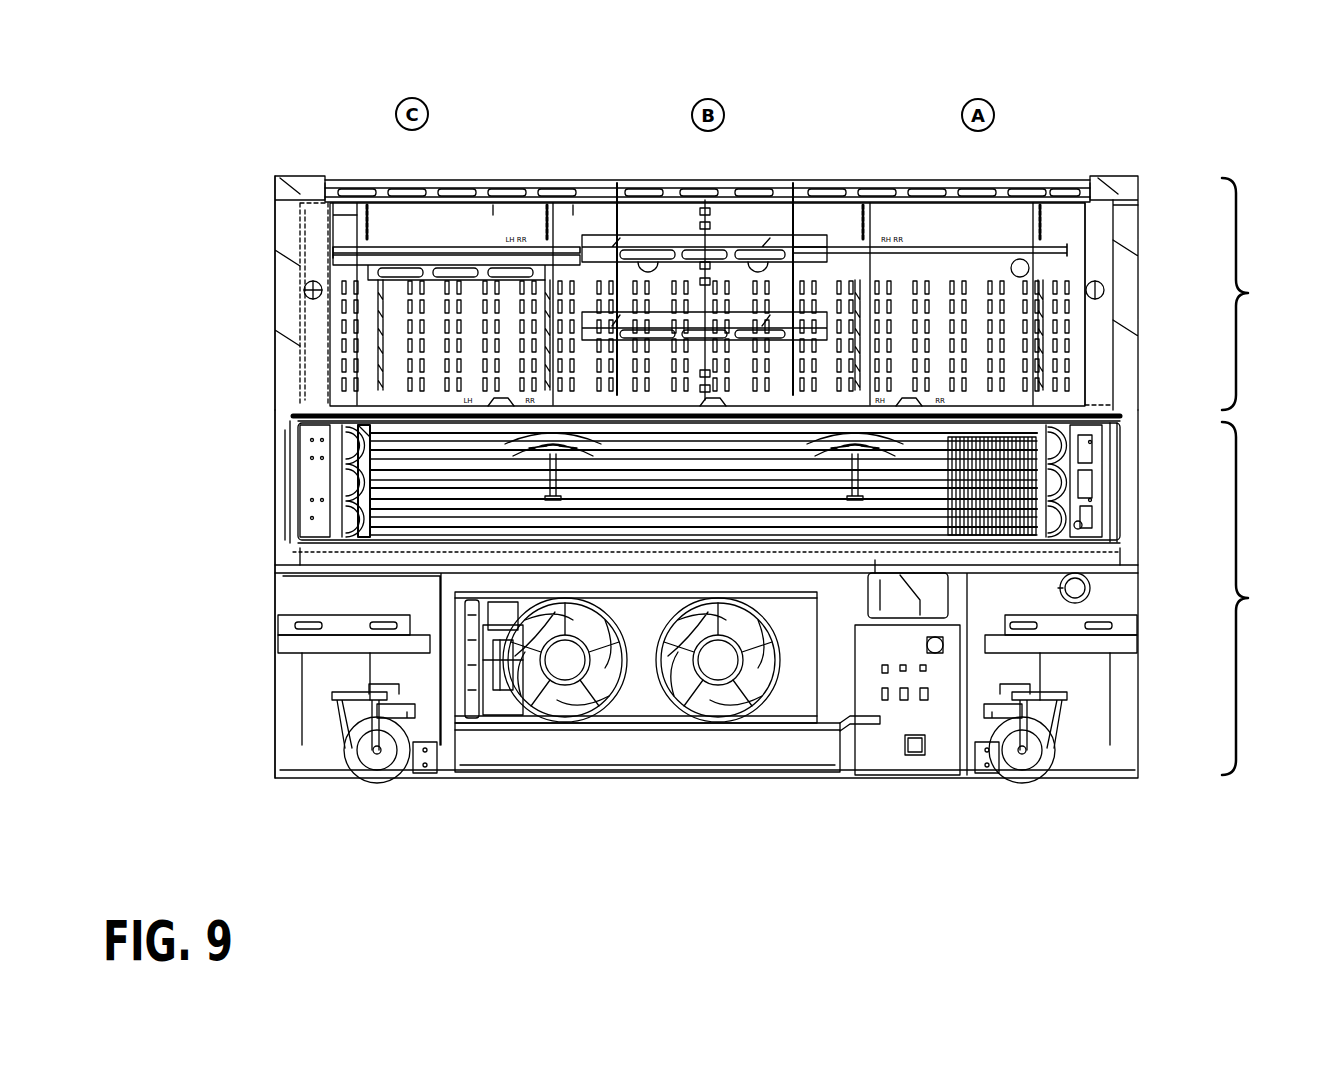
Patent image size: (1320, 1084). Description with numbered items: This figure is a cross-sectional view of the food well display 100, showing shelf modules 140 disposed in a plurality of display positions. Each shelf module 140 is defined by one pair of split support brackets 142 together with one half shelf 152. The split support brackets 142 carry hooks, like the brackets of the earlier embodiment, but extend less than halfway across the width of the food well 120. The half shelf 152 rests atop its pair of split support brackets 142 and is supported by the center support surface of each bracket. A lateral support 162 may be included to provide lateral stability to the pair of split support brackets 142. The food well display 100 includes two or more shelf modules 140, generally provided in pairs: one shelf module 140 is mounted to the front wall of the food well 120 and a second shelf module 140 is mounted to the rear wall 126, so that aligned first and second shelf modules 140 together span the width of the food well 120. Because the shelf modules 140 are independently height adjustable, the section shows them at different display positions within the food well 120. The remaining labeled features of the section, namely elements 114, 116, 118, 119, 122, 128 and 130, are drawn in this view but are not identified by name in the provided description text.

The food well display 100 is at (134, 108).
The upper section 114 is at (1261, 294).
The lower section 116 is at (1261, 598).
The top cap 118 is at (1125, 176).
The side wall 119 is at (1077, 177).
The food well 120 is at (398, 222).
The base 122 is at (738, 408).
The rear wall 126 is at (493, 220).
The side panel 128 is at (330, 315).
The support post 130 is at (367, 207).
The shelf module 140 is at (663, 340).
The split support bracket 142 is at (557, 290).
The half shelf 152 is at (450, 258).
The lateral support 162 is at (640, 365).